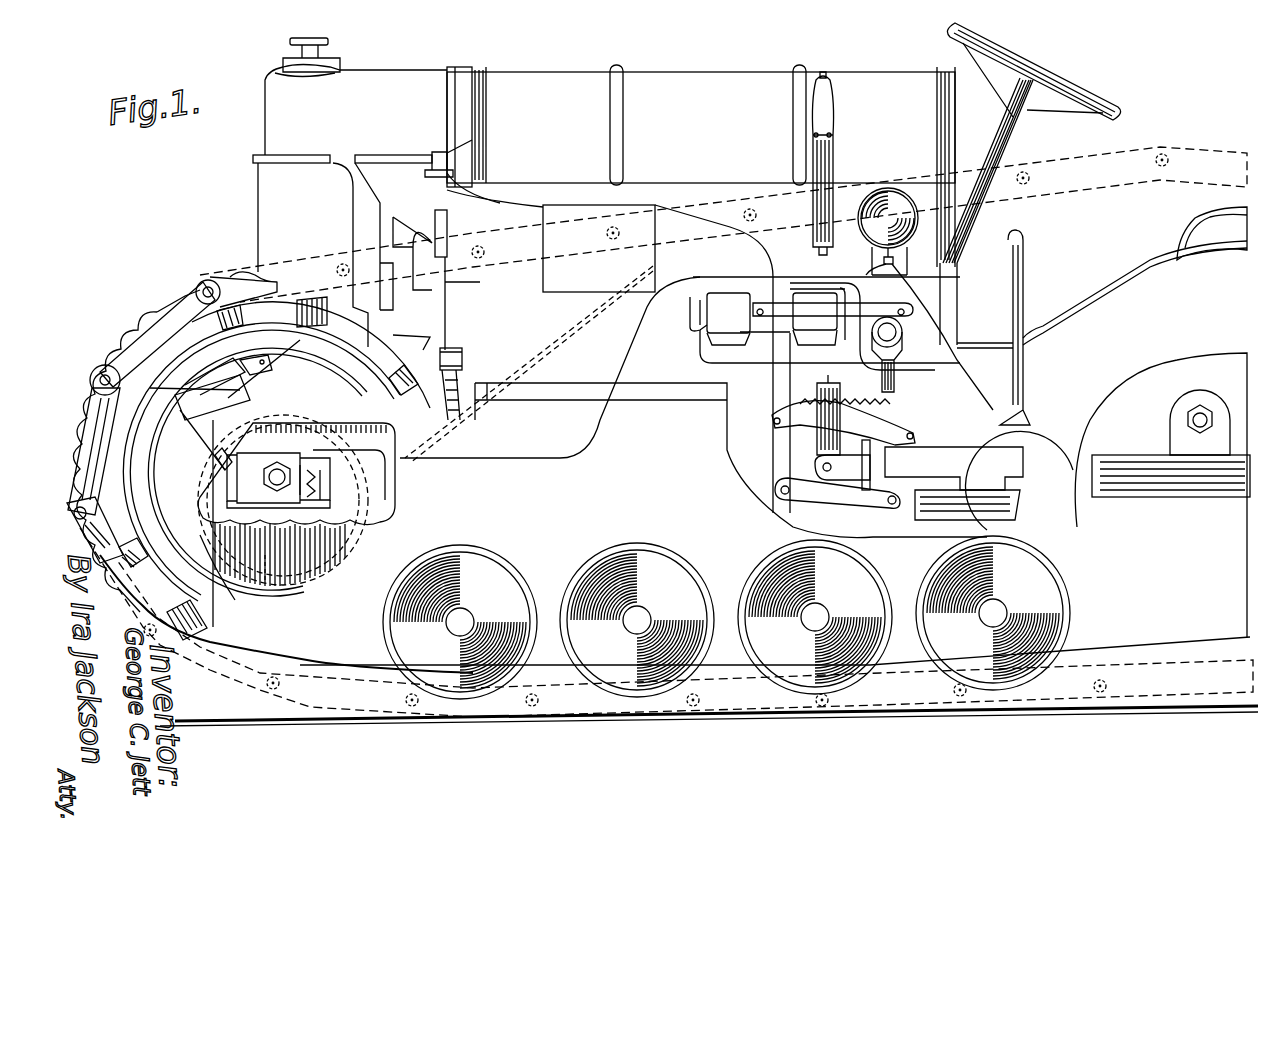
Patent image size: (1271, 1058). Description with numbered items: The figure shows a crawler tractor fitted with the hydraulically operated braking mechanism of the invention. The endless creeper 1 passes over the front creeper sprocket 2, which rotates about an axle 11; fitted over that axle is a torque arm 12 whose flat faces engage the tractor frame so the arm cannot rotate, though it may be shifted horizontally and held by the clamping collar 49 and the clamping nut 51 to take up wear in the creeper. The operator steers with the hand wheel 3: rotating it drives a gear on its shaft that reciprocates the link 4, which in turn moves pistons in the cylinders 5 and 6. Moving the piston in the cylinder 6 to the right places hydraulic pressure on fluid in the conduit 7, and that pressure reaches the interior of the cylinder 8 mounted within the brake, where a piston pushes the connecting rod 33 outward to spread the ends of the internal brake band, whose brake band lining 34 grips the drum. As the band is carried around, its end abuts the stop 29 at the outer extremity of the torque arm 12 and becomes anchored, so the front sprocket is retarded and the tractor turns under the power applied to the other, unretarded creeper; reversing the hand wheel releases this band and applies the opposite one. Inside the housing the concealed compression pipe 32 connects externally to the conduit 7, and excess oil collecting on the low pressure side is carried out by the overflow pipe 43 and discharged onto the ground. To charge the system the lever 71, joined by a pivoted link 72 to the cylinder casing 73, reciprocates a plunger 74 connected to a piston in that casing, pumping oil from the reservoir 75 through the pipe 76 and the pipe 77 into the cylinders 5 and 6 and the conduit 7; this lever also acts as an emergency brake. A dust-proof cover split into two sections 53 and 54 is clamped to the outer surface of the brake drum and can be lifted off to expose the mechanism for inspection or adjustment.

The endless creeper 1 is at (215, 660).
The front creeper sprocket 2 is at (195, 305).
The hand wheel 3 is at (1103, 100).
The link 4 is at (870, 312).
The cylinder 5 is at (725, 293).
The cylinder 6 is at (805, 293).
The conduit 7 is at (560, 458).
The cylinder 8 is at (240, 430).
The axle 11 is at (278, 511).
The torque arm 12 is at (255, 425).
The stop 29 is at (272, 365).
The compression pipe 32 is at (263, 583).
The connecting rod 33 is at (183, 377).
The brake band lining 34 is at (95, 529).
The overflow pipe 43 is at (320, 570).
The clamping collar 49 is at (311, 494).
The clamping nut 51 is at (277, 462).
The cover section 53 is at (380, 345).
The cover section 54 is at (225, 582).
The lever 71 is at (830, 155).
The pivoted link 72 is at (835, 500).
The cylinder casing 73 is at (954, 483).
The plunger 74 is at (852, 462).
The reservoir 75 is at (899, 203).
The pipe 76 is at (1000, 305).
The pipe 77 is at (920, 420).